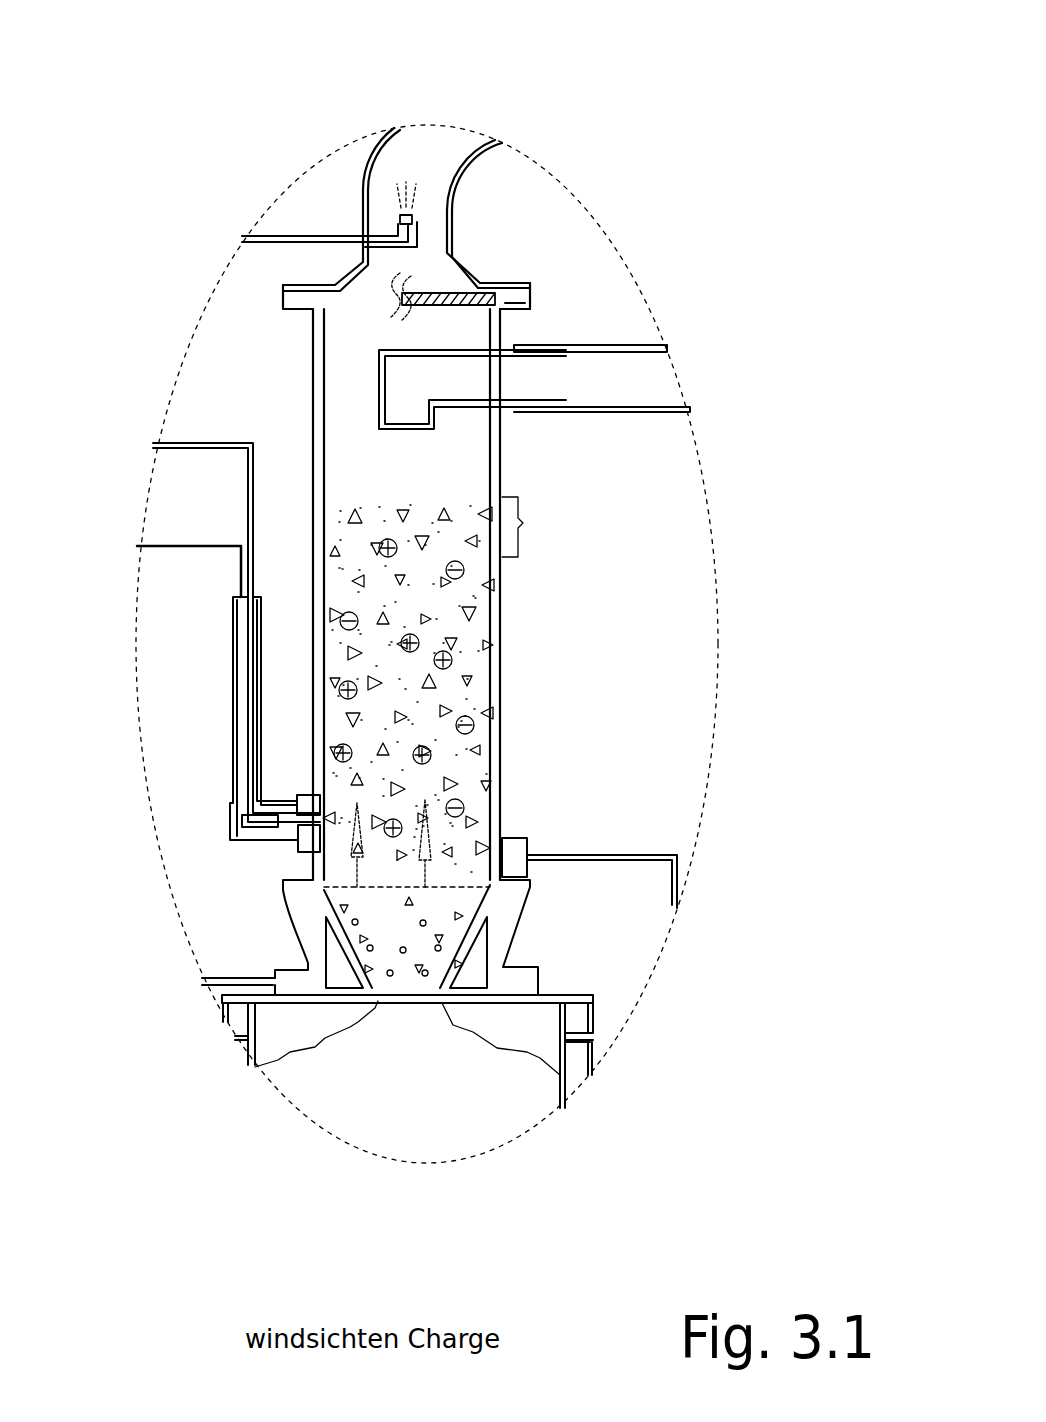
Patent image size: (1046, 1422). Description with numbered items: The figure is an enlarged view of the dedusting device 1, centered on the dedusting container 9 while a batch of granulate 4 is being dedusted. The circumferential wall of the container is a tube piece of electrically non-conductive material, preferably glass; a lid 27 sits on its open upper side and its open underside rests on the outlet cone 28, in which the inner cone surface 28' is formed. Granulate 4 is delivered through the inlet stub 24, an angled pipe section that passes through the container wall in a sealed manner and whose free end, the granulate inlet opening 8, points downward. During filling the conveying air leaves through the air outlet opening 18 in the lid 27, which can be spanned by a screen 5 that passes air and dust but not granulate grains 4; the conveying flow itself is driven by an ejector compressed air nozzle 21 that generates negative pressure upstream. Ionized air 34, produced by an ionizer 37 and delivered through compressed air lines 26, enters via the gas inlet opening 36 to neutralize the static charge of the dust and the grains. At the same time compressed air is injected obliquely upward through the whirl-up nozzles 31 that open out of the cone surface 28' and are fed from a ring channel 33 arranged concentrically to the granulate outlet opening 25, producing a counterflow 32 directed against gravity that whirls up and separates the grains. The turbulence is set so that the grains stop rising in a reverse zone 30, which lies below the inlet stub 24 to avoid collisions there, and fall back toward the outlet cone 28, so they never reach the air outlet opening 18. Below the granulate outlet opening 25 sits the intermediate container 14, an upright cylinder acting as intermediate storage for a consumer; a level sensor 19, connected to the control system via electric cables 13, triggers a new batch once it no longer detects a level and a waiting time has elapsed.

The Vorrichtung (apparatus) 1 is at (137, 80).
The granulate 4 is at (408, 812).
The screen 5 is at (437, 295).
The granulate inlet opening 8 is at (408, 430).
The dedusting container 9 is at (738, 643).
The electric cables 13 is at (185, 547).
The intermediate container 14 is at (598, 1068).
The air outlet opening 18 is at (380, 299).
The level sensor 19 is at (512, 853).
The ejector compressed air nozzle 21 is at (402, 217).
The inlet stub 24 is at (380, 397).
The granulate outlet opening 25 is at (392, 1006).
The compressed air lines 26 is at (288, 235).
The lid 27 is at (522, 300).
The outlet cone 28 is at (439, 925).
The inner cone surface 28' is at (486, 952).
The reverse zone 30 is at (534, 527).
The whirl-up nozzles 31 is at (387, 972).
The counterflow 32 is at (425, 873).
The ring channel 33 is at (477, 980).
The ionized air 34 is at (452, 653).
The gas inlet opening 36 is at (317, 822).
The ionizer 37 is at (240, 693).